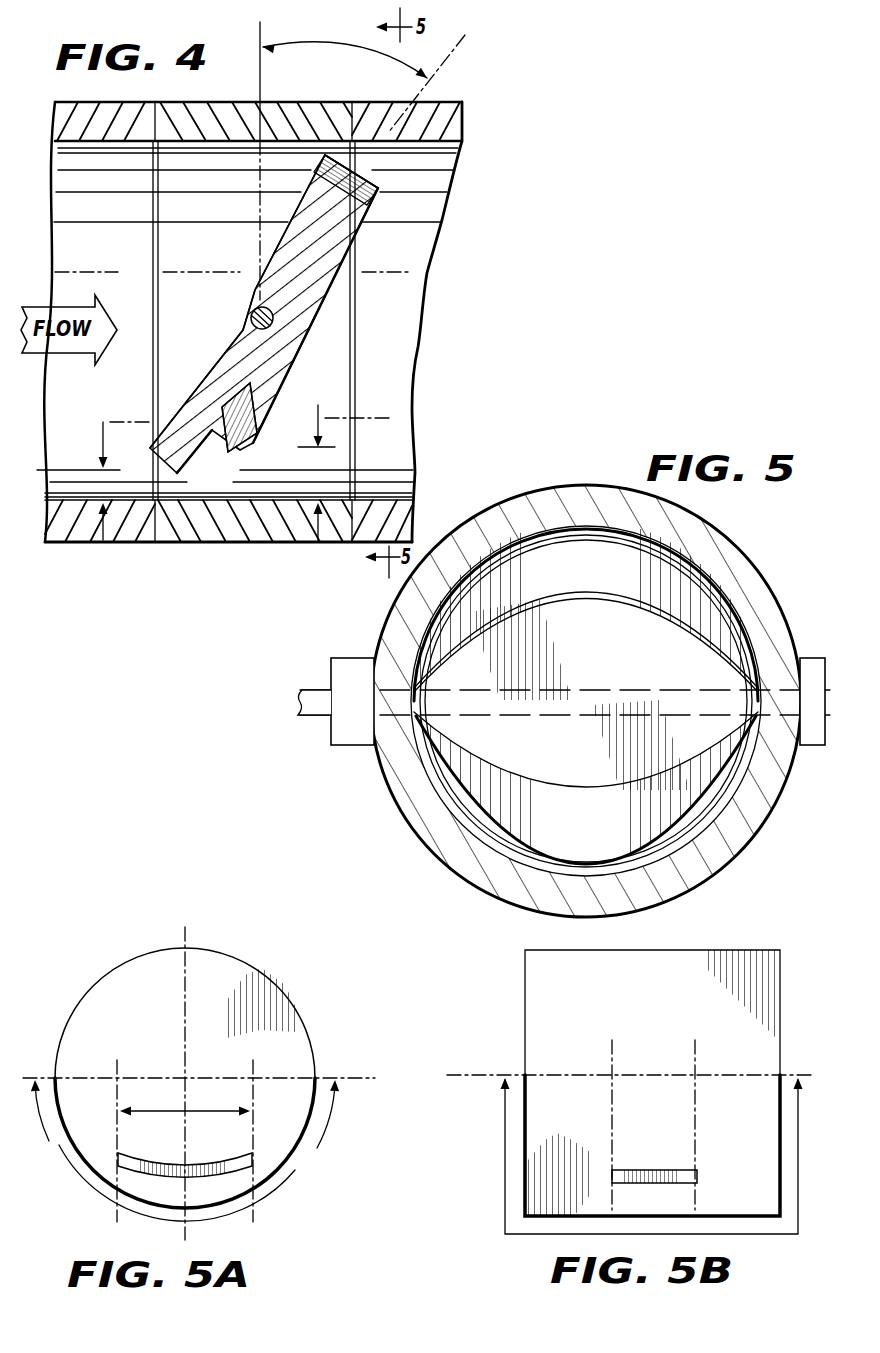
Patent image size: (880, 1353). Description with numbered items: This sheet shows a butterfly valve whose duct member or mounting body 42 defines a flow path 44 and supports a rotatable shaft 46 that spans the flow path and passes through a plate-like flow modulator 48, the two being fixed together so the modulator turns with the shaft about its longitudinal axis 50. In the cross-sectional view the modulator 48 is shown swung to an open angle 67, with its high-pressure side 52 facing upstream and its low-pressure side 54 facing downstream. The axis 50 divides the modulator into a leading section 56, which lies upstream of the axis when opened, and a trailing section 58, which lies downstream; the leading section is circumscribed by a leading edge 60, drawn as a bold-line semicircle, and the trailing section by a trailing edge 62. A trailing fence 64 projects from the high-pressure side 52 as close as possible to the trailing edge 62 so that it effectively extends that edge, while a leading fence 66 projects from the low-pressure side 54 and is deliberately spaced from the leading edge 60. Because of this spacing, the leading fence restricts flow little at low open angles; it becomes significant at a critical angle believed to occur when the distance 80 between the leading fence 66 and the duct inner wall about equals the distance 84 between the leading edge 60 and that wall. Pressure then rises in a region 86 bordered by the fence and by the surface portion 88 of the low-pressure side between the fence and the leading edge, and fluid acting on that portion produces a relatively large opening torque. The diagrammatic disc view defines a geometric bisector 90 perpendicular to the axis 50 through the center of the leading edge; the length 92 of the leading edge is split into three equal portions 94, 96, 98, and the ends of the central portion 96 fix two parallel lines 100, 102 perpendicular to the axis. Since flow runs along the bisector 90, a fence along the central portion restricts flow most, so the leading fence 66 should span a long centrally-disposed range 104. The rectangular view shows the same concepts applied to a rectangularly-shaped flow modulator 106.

In FIG. 5, the duct member or mounting body 42 is at (362, 750).
In FIG. 5, the flow path 44 is at (546, 873).
In FIG. 4, the rotatable shaft 46 is at (252, 310).
In FIG. 5, the rotatable shaft 46 is at (312, 716).
In FIG. 4, the plate-like flow modulator 48 is at (345, 255).
In FIG. 5, the plate-like flow modulator 48 is at (765, 638).
In FIG. 5A, the plate-like flow modulator 48 is at (210, 945).
In FIG. 4, the longitudinal axis 50 is at (241, 333).
In FIG. 5A, the longitudinal axis 50 is at (308, 1070).
In FIG. 5B, the longitudinal axis 50 is at (482, 1073).
In FIG. 4, the high-pressure side 52 is at (256, 250).
In FIG. 4, the low-pressure side 54 is at (318, 322).
In FIG. 5A, the leading section 56 is at (85, 1097).
In FIG. 5B, the leading section 56 is at (563, 1100).
In FIG. 5A, the trailing section 58 is at (85, 1052).
In FIG. 5B, the trailing section 58 is at (565, 1048).
In FIG. 4, the leading edge 60 is at (228, 487).
In FIG. 5A, the leading edge 60 is at (104, 1186).
In FIG. 5B, the leading edge 60 is at (565, 1223).
In FIG. 4, the trailing edge 62 is at (378, 194).
In FIG. 5A, the trailing edge 62 is at (86, 980).
In FIG. 4, the trailing fence 64 is at (287, 225).
In FIG. 5, the trailing fence 64 is at (585, 572).
In FIG. 4, the leading fence 66 is at (250, 440).
In FIG. 5, the leading fence 66 is at (586, 790).
In FIG. 5A, the leading fence 66 is at (165, 1152).
In FIG. 5B, the leading fence 66 is at (668, 1168).
In FIG. 4, the open angle 67 is at (350, 66).
In FIG. 4, the distance between leading fence and inner wall 80 is at (316, 412).
In FIG. 4, the distance between leading edge and inner wall 84 is at (100, 432).
In FIG. 4, the region 86 is at (225, 463).
In FIG. 5, the surface portion 88 is at (511, 845).
In FIG. 5A, the geometric bisector 90 is at (187, 1010).
In FIG. 5A, the length of leading edge 92 is at (320, 1152).
In FIG. 5B, the length of leading edge 92 is at (505, 1168).
In FIG. 5A, the leading edge portion 94 is at (62, 1144).
In FIG. 5A, the centrally-disposed portion 96 is at (158, 1218).
In FIG. 5A, the leading edge portion 98 is at (290, 1168).
In FIG. 5A, the parallel line 100 is at (120, 1076).
In FIG. 5B, the parallel line 100 is at (614, 1120).
In FIG. 5A, the parallel line 102 is at (256, 1138).
In FIG. 5B, the parallel line 102 is at (696, 1118).
In FIG. 5A, the centrally-disposed range 104 is at (200, 1113).
In FIG. 5B, the rectangularly-shaped flow modulator 106 is at (517, 1020).